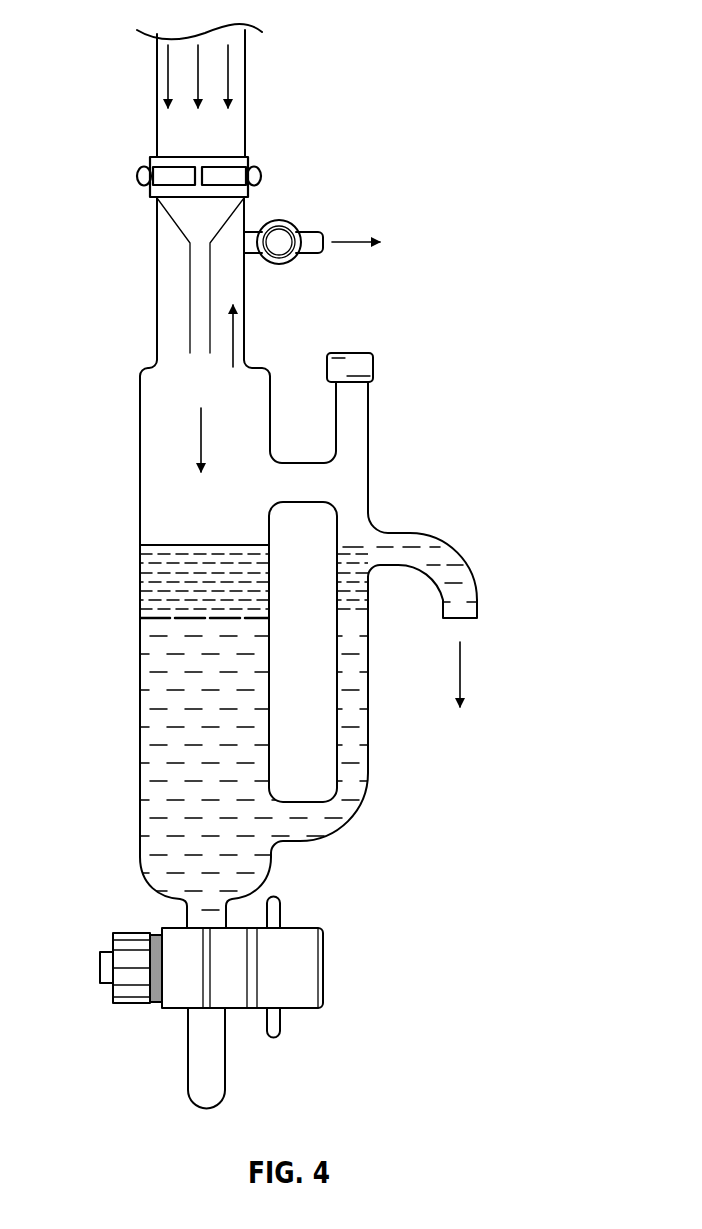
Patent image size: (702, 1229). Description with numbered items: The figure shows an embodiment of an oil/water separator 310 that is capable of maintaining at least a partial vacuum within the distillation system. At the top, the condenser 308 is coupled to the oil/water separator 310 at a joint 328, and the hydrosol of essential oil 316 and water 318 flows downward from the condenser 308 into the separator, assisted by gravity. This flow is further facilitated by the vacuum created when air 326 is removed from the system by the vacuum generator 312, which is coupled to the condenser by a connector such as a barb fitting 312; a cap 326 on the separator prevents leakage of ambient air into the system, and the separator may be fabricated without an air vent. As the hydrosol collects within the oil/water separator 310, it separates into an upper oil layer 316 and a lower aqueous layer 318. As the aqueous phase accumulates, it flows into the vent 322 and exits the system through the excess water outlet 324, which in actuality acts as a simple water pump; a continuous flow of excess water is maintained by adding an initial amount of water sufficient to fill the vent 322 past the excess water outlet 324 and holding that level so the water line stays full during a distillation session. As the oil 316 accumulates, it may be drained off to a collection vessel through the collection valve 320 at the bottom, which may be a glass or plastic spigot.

The condenser 308 is at (245, 90).
The joint 328 is at (259, 175).
The vacuum generator 312 is at (280, 265).
The air / cap 326 is at (350, 242).
The oil/water separator 310 is at (368, 425).
The vent 322 is at (353, 481).
The excess water outlet 324 is at (478, 608).
The essential oil 316 is at (140, 577).
The water 318 is at (140, 713).
The collection valve 320 is at (323, 968).